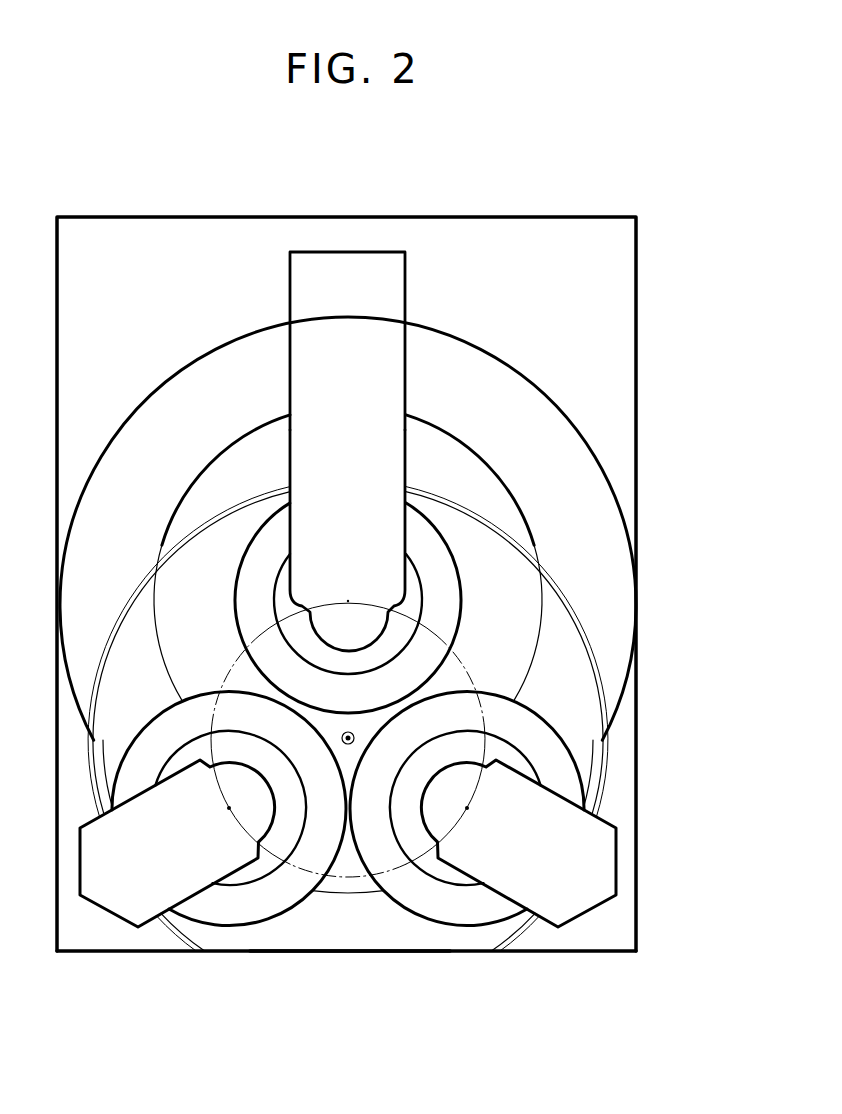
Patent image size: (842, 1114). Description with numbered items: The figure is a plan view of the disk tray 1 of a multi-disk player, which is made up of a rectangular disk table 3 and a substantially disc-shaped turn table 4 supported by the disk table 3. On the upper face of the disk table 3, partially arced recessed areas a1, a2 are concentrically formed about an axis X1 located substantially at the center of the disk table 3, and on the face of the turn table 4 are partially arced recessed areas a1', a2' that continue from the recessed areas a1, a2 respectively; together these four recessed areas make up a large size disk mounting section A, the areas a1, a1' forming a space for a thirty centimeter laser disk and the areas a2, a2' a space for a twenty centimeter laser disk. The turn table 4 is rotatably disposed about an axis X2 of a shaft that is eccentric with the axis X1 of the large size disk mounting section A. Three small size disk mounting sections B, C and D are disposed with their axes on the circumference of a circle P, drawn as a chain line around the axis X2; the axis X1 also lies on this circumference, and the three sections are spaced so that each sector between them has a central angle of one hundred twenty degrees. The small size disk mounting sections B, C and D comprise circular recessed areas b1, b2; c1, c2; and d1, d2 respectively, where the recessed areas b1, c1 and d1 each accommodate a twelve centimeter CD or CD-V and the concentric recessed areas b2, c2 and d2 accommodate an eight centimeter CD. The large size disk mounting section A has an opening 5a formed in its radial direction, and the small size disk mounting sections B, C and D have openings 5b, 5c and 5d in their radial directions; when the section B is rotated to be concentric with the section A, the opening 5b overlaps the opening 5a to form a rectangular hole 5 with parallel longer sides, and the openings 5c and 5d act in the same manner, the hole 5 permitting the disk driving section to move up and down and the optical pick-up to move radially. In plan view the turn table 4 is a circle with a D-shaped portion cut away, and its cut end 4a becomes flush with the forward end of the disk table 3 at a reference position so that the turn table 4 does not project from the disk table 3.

The disk tray 1 is at (576, 212).
The disk table 3 is at (637, 303).
The turn table 4 is at (305, 937).
The cut end 4a is at (359, 953).
The rectangular hole 5 is at (347, 451).
The opening 5a is at (292, 371).
The opening 5b is at (291, 540).
The opening 5c is at (175, 777).
The opening 5d is at (480, 870).
The large size disk mounting section A is at (348, 599).
The recessed area a1 is at (348, 605).
The recessed area a2 is at (348, 480).
The recessed area a1' is at (348, 719).
The recessed area a2' is at (348, 622).
The small size disk mounting section B is at (368, 608).
The recessed area b1 is at (248, 573).
The recessed area b2 is at (308, 657).
The small size disk mounting section C is at (229, 851).
The recessed area c1 is at (267, 700).
The recessed area c2 is at (264, 742).
The small size disk mounting section D is at (467, 851).
The recessed area d1 is at (492, 698).
The recessed area d2 is at (454, 766).
The circle P is at (233, 657).
The axis X1 is at (346, 602).
The axis X2 is at (349, 731).